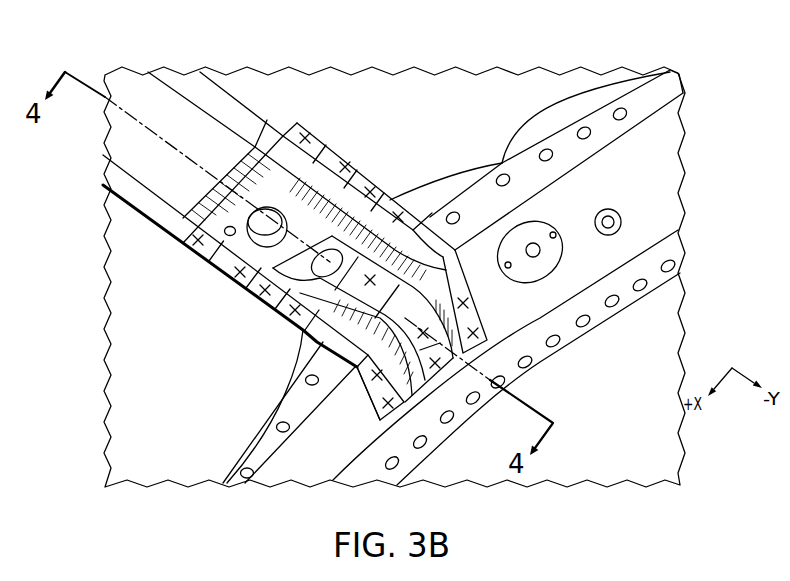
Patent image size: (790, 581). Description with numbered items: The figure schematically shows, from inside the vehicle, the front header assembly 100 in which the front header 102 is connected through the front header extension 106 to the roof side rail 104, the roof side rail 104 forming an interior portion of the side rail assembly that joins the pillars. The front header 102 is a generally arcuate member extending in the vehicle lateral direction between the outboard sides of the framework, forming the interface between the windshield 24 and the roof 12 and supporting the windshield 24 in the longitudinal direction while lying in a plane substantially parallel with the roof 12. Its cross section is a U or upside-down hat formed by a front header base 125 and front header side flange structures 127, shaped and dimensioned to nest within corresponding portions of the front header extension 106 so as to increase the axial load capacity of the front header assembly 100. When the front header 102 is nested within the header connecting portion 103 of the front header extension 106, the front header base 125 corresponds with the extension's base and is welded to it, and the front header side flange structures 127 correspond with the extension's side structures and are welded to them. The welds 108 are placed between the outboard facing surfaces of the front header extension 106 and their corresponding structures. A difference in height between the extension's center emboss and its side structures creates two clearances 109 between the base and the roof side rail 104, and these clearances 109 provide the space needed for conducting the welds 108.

The front header assembly 100 is at (139, 321).
The front header 102 is at (118, 79).
The header connecting portion 103 is at (347, 80).
The roof side rail 104 is at (590, 291).
The front header extension 106 is at (393, 167).
The welds 108 is at (197, 246).
The clearances 109 is at (465, 377).
The roof 12 is at (481, 125).
The windshield 24 is at (183, 381).
The front header base 125 is at (145, 73).
The front header side flange structures 127 is at (244, 88).